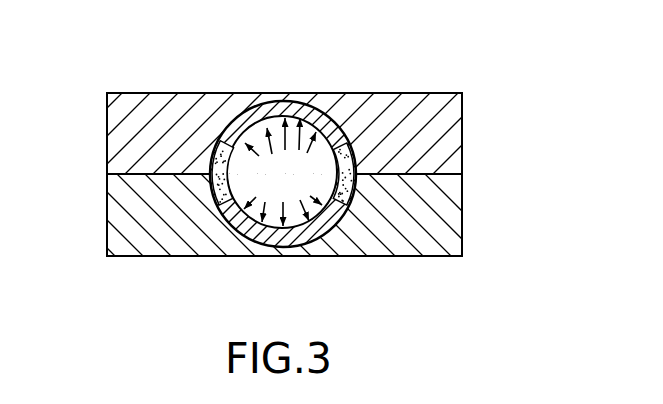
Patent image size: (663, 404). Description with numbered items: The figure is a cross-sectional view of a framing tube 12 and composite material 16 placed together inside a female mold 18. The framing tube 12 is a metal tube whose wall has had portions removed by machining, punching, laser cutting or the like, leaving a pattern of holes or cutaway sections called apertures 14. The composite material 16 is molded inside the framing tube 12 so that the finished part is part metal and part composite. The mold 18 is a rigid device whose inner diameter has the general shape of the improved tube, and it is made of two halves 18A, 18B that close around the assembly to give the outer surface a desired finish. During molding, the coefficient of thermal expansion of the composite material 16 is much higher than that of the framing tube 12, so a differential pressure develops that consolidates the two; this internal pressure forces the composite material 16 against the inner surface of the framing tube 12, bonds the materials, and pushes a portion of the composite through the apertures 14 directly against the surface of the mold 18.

The framing tube 12 is at (346, 153).
The apertures 14 is at (238, 118).
The composite material 16 is at (322, 240).
The female mold 18 is at (112, 93).
The mold half 18A is at (456, 93).
The mold half 18B is at (436, 257).